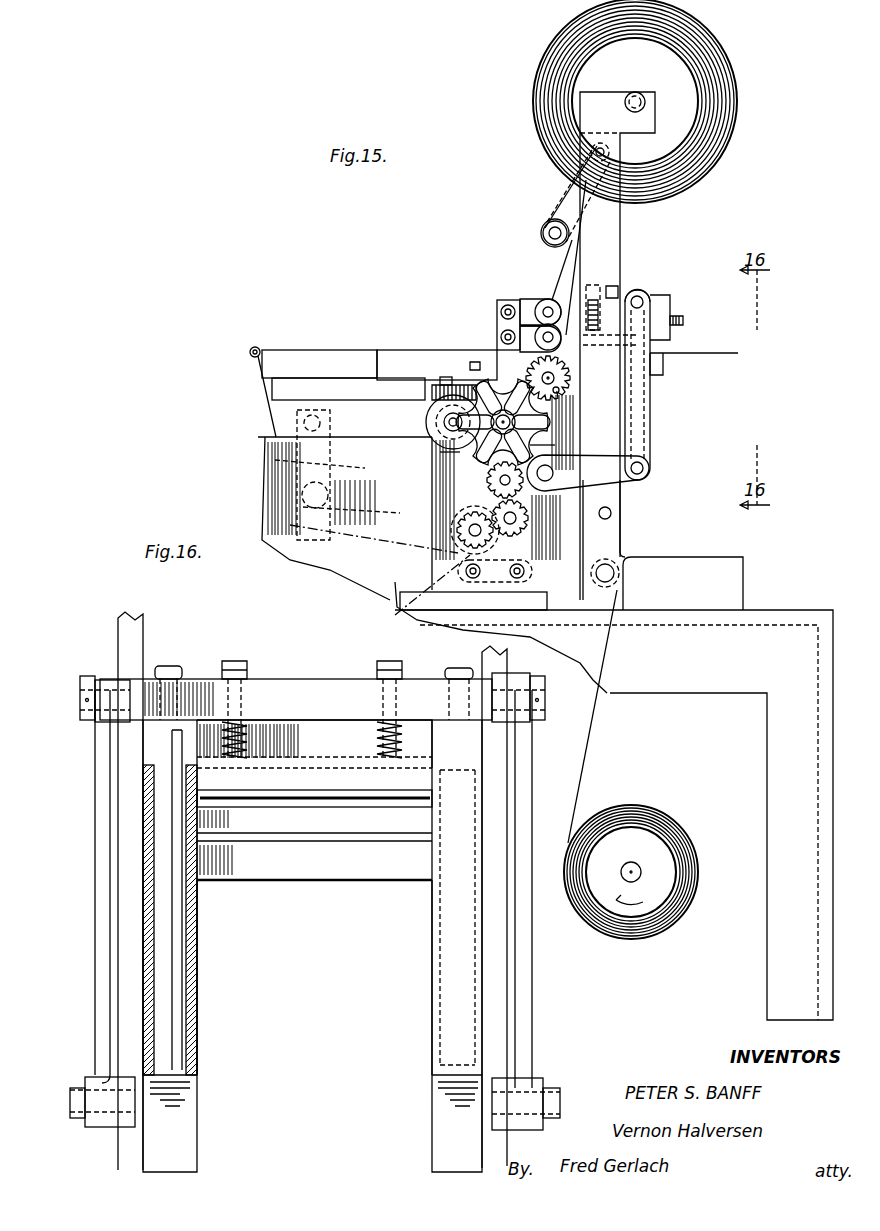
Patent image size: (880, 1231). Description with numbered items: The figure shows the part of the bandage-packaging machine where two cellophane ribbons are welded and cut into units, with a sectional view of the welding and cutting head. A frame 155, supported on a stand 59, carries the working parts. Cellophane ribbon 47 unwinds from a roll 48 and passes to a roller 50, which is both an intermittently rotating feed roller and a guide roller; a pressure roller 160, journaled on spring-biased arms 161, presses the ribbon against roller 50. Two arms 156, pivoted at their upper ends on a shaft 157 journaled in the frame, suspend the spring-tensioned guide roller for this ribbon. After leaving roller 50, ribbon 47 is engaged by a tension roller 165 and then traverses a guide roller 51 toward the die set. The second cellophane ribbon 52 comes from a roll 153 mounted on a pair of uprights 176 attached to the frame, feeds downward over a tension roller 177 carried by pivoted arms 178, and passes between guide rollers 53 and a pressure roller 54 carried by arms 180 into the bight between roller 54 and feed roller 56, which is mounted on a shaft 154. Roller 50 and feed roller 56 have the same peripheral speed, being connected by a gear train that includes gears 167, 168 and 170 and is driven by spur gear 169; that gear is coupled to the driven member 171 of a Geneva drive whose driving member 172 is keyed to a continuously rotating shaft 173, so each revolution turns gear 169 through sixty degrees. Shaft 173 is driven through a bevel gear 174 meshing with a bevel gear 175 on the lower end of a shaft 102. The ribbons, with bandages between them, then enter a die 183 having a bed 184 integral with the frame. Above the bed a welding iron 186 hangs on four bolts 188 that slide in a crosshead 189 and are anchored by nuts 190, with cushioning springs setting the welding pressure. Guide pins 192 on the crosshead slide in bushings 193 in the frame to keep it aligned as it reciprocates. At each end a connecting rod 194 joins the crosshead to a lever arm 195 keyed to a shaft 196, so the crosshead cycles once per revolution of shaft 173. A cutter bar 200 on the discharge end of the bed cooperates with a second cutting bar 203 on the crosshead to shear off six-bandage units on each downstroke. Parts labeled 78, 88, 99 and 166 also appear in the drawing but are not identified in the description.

In FIG. 15, the cellophane ribbon 47 is at (595, 731).
In FIG. 15, the roll 48 is at (688, 862).
In FIG. 15, the roller 50 is at (380, 570).
In FIG. 15, the guide roller 51 is at (255, 347).
In FIG. 15, the cellophane ribbon 52 is at (565, 262).
In FIG. 15, the guide rollers 53 is at (548, 300).
In FIG. 15, the pressure roller 54 is at (578, 278).
In FIG. 15, the feed roller 56 is at (473, 362).
In FIG. 15, the stand 59 is at (807, 609).
In FIG. 15, the plate 78 is at (303, 353).
In FIG. 15, the bar 88 is at (348, 389).
In FIG. 15, the roller 99 is at (593, 582).
In FIG. 15, the shaft 102 is at (447, 370).
In FIG. 15, the roll 153 is at (720, 155).
In FIG. 15, the shaft 154 is at (552, 379).
In FIG. 15, the frame 155 is at (700, 553).
In FIG. 16, the frame 155 is at (437, 1113).
In FIG. 15, the arms 156 is at (620, 562).
In FIG. 15, the shaft 157 is at (611, 516).
In FIG. 15, the pressure roller 160 is at (424, 625).
In FIG. 15, the arms 161 is at (498, 600).
In FIG. 15, the tension roller 165 is at (332, 488).
In FIG. 15, the gear 166 is at (458, 526).
In FIG. 15, the gear 167 is at (519, 529).
In FIG. 15, the gear 168 is at (518, 496).
In FIG. 15, the spur gear 169 is at (530, 426).
In FIG. 15, the gear 170 is at (560, 392).
In FIG. 15, the driven member 171 is at (555, 445).
In FIG. 15, the driving member 172 is at (452, 458).
In FIG. 15, the shaft 173 is at (452, 423).
In FIG. 15, the bevel gear 174 is at (427, 434).
In FIG. 15, the bevel gear 175 is at (440, 381).
In FIG. 15, the uprights 176 is at (614, 234).
In FIG. 16, the uprights 176 is at (484, 656).
In FIG. 15, the tension roller 177 is at (540, 232).
In FIG. 15, the arms 178 is at (556, 218).
In FIG. 15, the arms 180 is at (520, 333).
In FIG. 15, the die 183 is at (650, 292).
In FIG. 16, the bed 184 is at (315, 875).
In FIG. 15, the welding iron 186 is at (593, 293).
In FIG. 16, the welding iron 186 is at (262, 808).
In FIG. 15, the bolts 188 is at (618, 290).
In FIG. 16, the bolts 188 is at (393, 664).
In FIG. 15, the crosshead 189 is at (670, 306).
In FIG. 16, the crosshead 189 is at (288, 680).
In FIG. 16, the nuts 190 is at (387, 665).
In FIG. 16, the guide pins 192 is at (168, 942).
In FIG. 16, the bushings 193 is at (435, 1022).
In FIG. 15, the connecting rod 194 is at (650, 393).
In FIG. 16, the connecting rod 194 is at (523, 1000).
In FIG. 15, the lever arms 195 is at (645, 484).
In FIG. 16, the lever arms 195 is at (533, 1077).
In FIG. 15, the shaft 196 is at (553, 474).
In FIG. 15, the cutter bar 200 is at (665, 357).
In FIG. 16, the cutter bar 200 is at (345, 842).
In FIG. 15, the second cutting bar 203 is at (672, 339).
In FIG. 16, the second cutting bar 203 is at (382, 783).